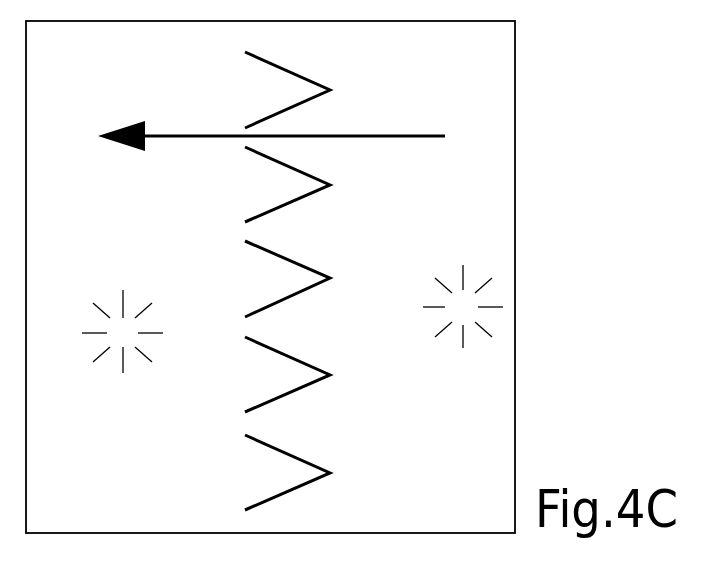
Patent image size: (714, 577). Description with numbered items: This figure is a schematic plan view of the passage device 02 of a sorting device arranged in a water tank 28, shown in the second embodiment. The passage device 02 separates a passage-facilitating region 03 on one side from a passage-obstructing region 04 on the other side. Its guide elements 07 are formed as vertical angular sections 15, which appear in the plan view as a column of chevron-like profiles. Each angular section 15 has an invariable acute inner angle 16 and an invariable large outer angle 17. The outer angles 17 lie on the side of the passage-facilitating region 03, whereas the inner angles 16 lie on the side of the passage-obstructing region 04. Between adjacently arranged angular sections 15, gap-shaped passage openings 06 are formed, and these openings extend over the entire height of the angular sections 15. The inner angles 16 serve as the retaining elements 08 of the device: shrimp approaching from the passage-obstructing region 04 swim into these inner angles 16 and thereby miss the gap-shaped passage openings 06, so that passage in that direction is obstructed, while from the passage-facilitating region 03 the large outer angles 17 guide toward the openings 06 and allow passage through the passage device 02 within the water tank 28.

The passage device 02 is at (386, 97).
The passage-facilitating region 03 is at (463, 306).
The passage-obstructing region 04 is at (122, 331).
The passage openings 06 is at (235, 329).
The guide elements 07 is at (300, 232).
The angular sections 15 is at (300, 232).
The inner angle 16 is at (234, 279).
The retaining elements 08 is at (280, 279).
The outer angle 17 is at (332, 282).
The water tank 28 is at (515, 415).